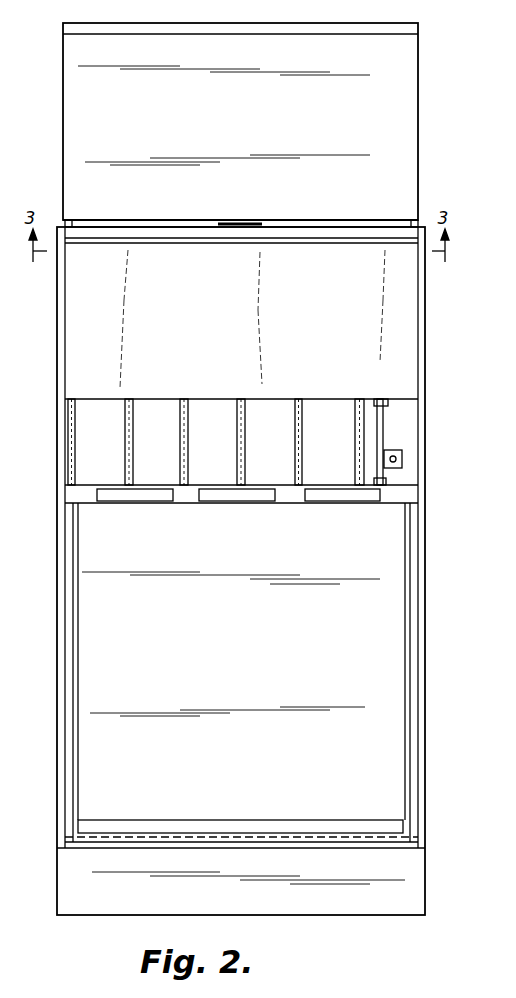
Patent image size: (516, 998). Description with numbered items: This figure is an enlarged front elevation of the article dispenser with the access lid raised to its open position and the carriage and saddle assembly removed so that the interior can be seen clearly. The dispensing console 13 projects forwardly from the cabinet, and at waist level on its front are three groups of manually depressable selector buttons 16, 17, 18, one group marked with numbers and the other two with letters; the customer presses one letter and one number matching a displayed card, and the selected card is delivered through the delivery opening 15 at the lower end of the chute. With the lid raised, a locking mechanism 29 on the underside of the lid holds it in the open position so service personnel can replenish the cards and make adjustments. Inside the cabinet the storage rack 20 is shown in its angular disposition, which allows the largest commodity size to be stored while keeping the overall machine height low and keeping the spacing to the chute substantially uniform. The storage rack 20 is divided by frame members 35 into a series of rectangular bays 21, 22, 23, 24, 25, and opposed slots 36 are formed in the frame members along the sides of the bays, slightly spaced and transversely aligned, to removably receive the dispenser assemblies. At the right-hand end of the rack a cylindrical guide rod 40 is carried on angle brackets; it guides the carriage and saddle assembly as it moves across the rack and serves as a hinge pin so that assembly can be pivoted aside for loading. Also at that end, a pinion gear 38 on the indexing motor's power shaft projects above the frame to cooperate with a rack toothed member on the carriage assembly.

The dispensing console 13 is at (405, 112).
The delivery opening 15 is at (78, 828).
The selector buttons 16 is at (118, 497).
The selector buttons 17 is at (221, 497).
The selector buttons 18 is at (318, 497).
The storage rack 20 is at (84, 408).
The rectangular bay 21 is at (100, 442).
The rectangular bay 22 is at (156, 442).
The rectangular bay 23 is at (212, 442).
The rectangular bay 24 is at (270, 442).
The rectangular bay 25 is at (328, 442).
The locking mechanism 29 is at (226, 228).
The frame members 35 is at (69, 432).
The opposed slots 36 is at (181, 415).
The pinion gear 38 is at (401, 460).
The cylindrical guide rod 40 is at (384, 421).